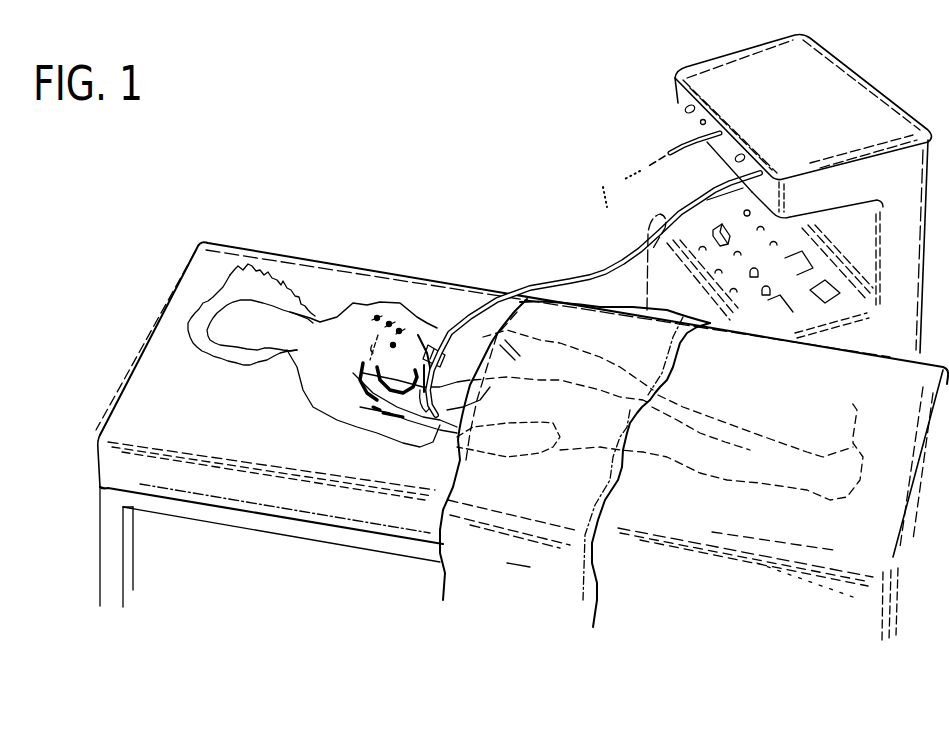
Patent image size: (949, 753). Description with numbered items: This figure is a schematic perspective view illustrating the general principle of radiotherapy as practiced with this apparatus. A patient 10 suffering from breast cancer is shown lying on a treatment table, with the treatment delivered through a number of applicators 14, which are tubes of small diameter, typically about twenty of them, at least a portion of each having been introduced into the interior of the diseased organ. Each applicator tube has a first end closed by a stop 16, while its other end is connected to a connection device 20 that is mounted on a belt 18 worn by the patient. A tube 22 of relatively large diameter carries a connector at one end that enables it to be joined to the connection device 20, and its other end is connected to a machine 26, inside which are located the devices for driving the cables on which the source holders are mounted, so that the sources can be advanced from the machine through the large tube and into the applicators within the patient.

The patient 10 is at (338, 304).
The applicators 14 is at (423, 405).
The stop 16 is at (418, 335).
The belt 18 is at (423, 400).
The connection device 20 is at (421, 334).
The tube 22 is at (627, 262).
The machine 26 is at (673, 92).